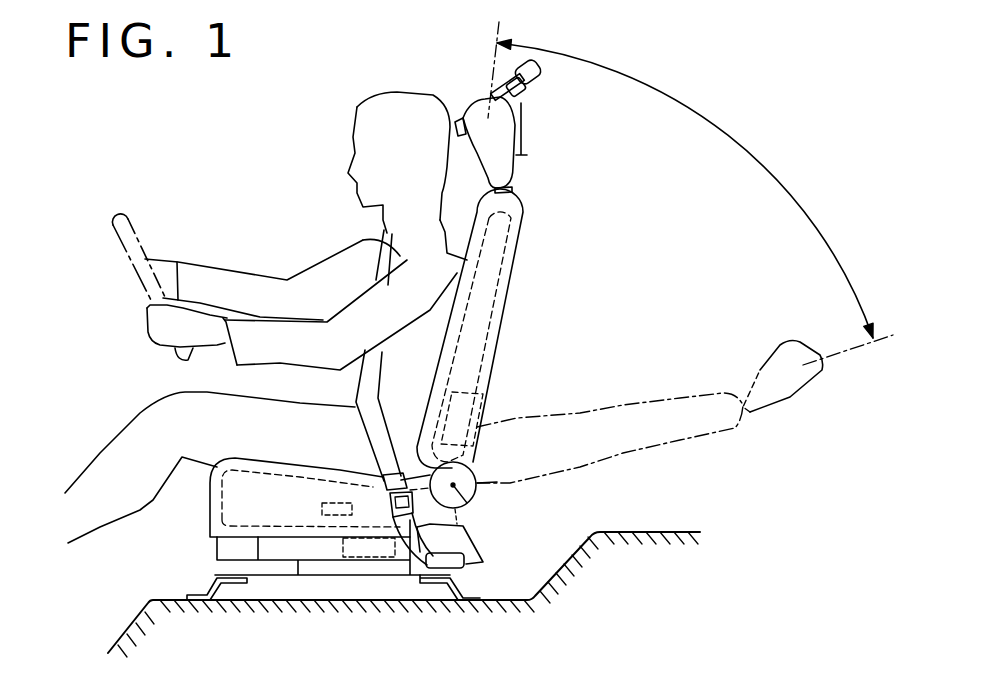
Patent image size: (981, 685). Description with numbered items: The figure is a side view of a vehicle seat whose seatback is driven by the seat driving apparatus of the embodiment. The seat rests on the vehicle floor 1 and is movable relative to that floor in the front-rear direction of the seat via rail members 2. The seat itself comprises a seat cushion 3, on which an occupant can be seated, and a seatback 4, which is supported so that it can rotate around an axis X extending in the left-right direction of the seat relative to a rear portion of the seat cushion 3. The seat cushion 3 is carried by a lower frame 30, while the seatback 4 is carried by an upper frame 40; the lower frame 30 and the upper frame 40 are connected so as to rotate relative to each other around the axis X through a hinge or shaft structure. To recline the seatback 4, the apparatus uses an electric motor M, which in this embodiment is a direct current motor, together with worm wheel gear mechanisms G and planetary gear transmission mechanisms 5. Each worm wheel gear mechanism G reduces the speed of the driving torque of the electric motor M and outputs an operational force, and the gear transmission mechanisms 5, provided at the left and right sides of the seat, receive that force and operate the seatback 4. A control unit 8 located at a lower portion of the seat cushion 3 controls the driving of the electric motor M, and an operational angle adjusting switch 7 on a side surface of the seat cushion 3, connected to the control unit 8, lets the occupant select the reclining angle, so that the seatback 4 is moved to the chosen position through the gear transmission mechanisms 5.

The vehicle floor 1 is at (133, 618).
The rail members 2 is at (298, 567).
The seat cushion 3 is at (210, 505).
The seatback 4 is at (520, 232).
The planetary gear transmission mechanisms 5 is at (477, 487).
The operational angle adjusting switch 7 is at (322, 512).
The control unit 8 is at (362, 557).
The lower frame 30 is at (262, 470).
The upper frame 40 is at (510, 287).
The electric motor M is at (487, 413).
The worm wheel gear mechanisms G is at (477, 458).
The axis X is at (473, 508).